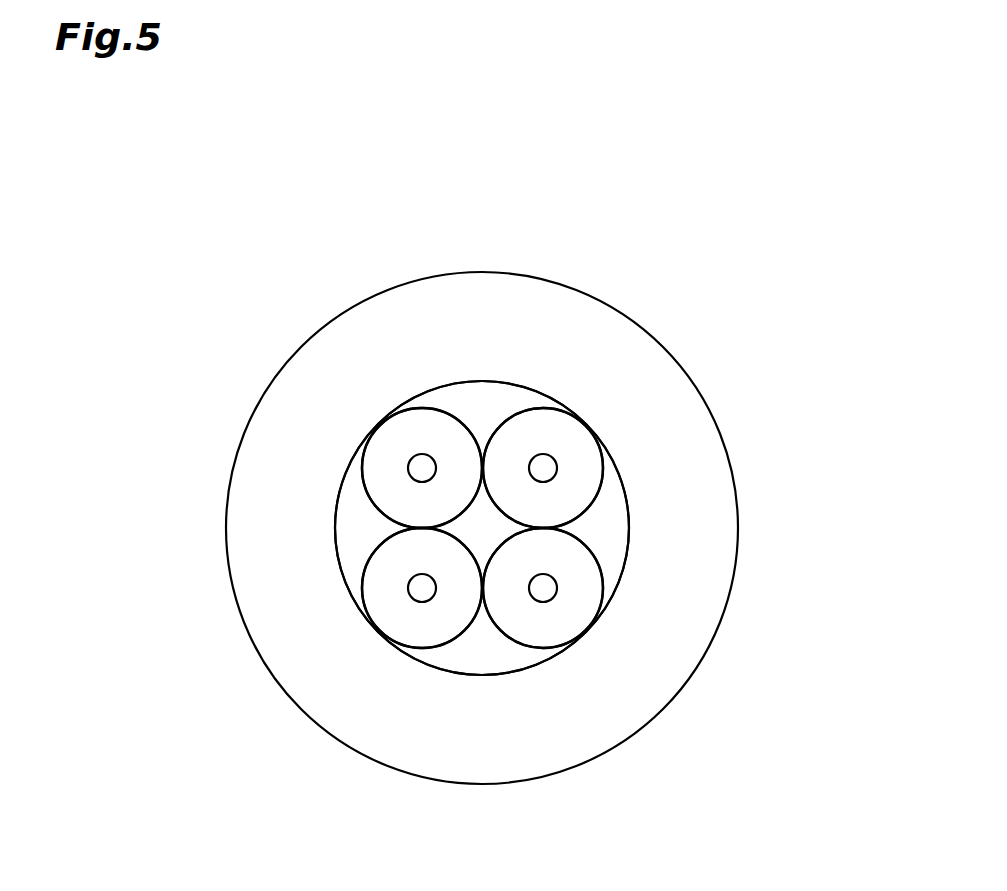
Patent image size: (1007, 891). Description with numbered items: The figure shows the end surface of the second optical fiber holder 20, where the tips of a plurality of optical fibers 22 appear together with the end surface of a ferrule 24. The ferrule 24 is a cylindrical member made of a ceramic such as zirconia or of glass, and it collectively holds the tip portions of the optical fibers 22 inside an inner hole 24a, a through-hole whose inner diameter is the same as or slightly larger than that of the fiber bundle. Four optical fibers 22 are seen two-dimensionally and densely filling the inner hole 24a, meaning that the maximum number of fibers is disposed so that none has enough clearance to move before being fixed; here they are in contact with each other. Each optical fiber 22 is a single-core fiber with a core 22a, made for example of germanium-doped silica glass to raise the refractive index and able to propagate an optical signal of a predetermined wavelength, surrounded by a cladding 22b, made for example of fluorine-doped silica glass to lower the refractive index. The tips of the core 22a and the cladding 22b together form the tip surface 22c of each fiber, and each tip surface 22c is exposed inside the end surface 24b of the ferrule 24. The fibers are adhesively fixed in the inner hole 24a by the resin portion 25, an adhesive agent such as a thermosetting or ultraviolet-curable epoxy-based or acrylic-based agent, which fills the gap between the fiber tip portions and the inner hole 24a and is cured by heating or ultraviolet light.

The second optical fiber holder 20 is at (492, 491).
The optical fiber 22 is at (492, 529).
The core 22a is at (412, 458).
The cladding 22b is at (380, 467).
The tip surface 22c is at (572, 493).
The ferrule 24 is at (534, 481).
The inner hole 24a is at (497, 384).
The end surface 24b is at (713, 530).
The resin portion 25 is at (358, 528).